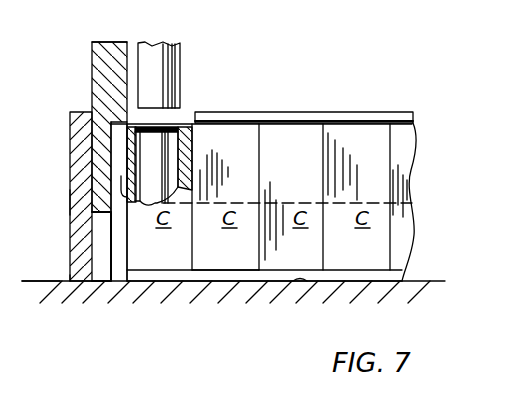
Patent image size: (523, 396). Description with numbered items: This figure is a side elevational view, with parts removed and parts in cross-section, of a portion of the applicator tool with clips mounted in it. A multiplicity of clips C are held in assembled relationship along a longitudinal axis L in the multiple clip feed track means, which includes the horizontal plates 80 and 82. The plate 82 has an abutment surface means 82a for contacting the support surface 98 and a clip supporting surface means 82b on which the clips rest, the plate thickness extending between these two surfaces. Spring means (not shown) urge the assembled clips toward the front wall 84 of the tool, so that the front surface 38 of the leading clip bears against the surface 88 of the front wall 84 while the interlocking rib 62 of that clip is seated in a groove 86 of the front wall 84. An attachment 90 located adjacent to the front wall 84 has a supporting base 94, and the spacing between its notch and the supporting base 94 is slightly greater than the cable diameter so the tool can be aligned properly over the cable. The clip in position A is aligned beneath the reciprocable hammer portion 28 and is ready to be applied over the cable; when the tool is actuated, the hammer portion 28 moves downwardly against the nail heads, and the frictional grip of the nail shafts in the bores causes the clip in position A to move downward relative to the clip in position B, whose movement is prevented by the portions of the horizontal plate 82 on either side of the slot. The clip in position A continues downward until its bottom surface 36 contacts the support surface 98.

The hammer portion 28 is at (172, 65).
The bottom surface 36 is at (157, 272).
The front surface 38 is at (126, 259).
The interlocking rib 62 is at (118, 237).
The horizontal plate 80 is at (283, 112).
The horizontal plate 82 is at (397, 278).
The abutment surface means 82a is at (296, 281).
The clip supporting surface means 82b is at (209, 279).
The front wall 84 is at (90, 70).
The groove 86 is at (112, 147).
The surface 88 is at (128, 55).
The attachment 90 is at (67, 197).
The supporting base 94 is at (72, 283).
The support surface 98 is at (32, 281).
The position A is at (175, 277).
The position B is at (232, 262).
The longitudinal axis L is at (393, 203).